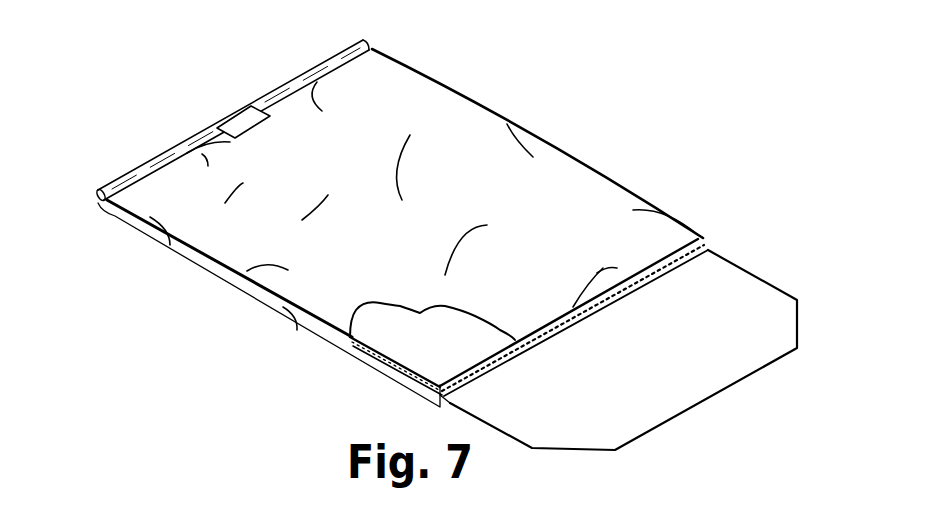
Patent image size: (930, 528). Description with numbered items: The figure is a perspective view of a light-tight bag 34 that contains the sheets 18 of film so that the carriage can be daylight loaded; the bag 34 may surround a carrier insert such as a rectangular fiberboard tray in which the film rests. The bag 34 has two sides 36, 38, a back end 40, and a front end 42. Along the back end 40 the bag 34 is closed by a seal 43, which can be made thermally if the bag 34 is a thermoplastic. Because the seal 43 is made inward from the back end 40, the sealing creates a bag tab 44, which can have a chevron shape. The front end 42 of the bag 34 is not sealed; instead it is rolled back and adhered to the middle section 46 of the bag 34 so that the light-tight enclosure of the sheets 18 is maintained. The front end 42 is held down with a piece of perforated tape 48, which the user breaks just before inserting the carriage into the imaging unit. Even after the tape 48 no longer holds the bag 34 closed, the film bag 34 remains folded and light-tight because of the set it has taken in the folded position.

The sheets 18 is at (408, 343).
The light-tight bag 34 is at (548, 100).
The side 36 is at (628, 191).
The side 38 is at (245, 287).
The back end 40 is at (704, 240).
The front end 42 is at (98, 203).
The seal 43 is at (687, 262).
The bag tab 44 is at (728, 370).
The middle section 46 is at (427, 113).
The perforated tape 48 is at (241, 111).